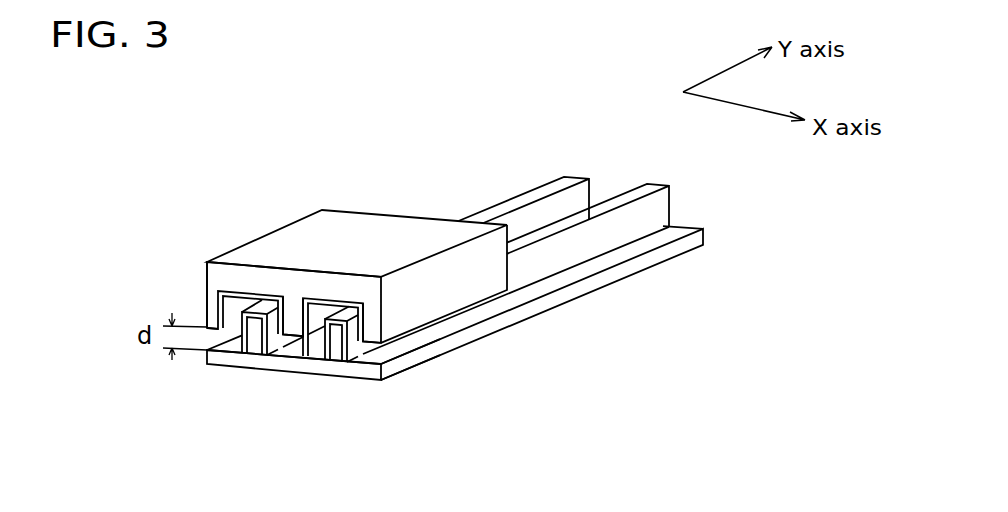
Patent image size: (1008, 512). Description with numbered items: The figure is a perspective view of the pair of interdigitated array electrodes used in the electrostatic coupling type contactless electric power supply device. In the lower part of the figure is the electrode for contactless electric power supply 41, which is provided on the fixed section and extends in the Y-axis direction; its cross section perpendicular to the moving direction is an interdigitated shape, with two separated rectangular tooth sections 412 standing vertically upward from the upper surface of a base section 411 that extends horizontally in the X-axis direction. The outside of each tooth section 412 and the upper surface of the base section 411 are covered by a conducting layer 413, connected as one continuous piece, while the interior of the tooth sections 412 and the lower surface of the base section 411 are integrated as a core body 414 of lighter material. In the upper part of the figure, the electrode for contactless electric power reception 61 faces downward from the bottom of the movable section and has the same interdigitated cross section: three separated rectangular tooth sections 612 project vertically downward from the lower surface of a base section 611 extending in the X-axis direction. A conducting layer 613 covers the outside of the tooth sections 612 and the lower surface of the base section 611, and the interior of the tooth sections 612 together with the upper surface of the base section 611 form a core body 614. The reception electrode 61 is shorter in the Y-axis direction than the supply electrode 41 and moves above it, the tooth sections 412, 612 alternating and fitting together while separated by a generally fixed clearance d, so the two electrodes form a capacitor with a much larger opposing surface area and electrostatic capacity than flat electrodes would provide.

The electrode for contactless electric power reception 61 is at (244, 236).
The base section 611 is at (327, 288).
The tooth sections 612 is at (293, 320).
The conducting layer 613 is at (207, 326).
The core body 614 is at (243, 280).
The electrode for contactless electric power supply 41 is at (523, 338).
The base section 411 is at (300, 367).
The tooth sections 412 is at (252, 337).
The conducting layer 413 is at (442, 350).
The core body 414 is at (394, 372).